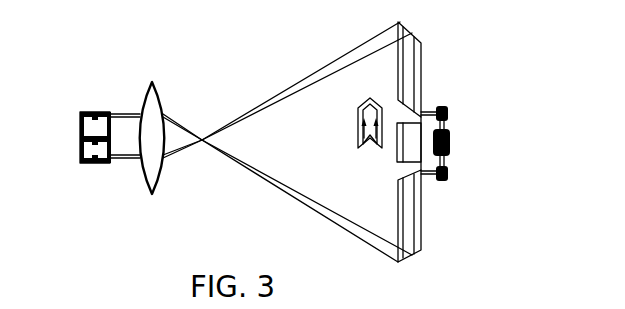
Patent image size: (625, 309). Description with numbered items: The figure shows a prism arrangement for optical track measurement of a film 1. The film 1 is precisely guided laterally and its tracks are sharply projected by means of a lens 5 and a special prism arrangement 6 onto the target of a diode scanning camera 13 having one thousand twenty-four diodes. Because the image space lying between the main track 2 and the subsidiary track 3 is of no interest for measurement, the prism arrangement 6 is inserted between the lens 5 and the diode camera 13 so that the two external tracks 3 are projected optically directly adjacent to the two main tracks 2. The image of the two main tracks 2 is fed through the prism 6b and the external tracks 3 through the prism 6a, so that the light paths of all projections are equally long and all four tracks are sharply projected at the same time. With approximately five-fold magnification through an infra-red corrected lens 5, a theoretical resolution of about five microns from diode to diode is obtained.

The film 1 is at (101, 126).
The main track 2 is at (80, 134).
The subsidiary track 3 is at (95, 113).
The lens 5 is at (153, 82).
The prism arrangement 6 is at (300, 57).
The prism for external tracks 6a is at (415, 60).
The prism for main tracks 6b is at (398, 158).
The diode scanning camera 13 is at (480, 155).